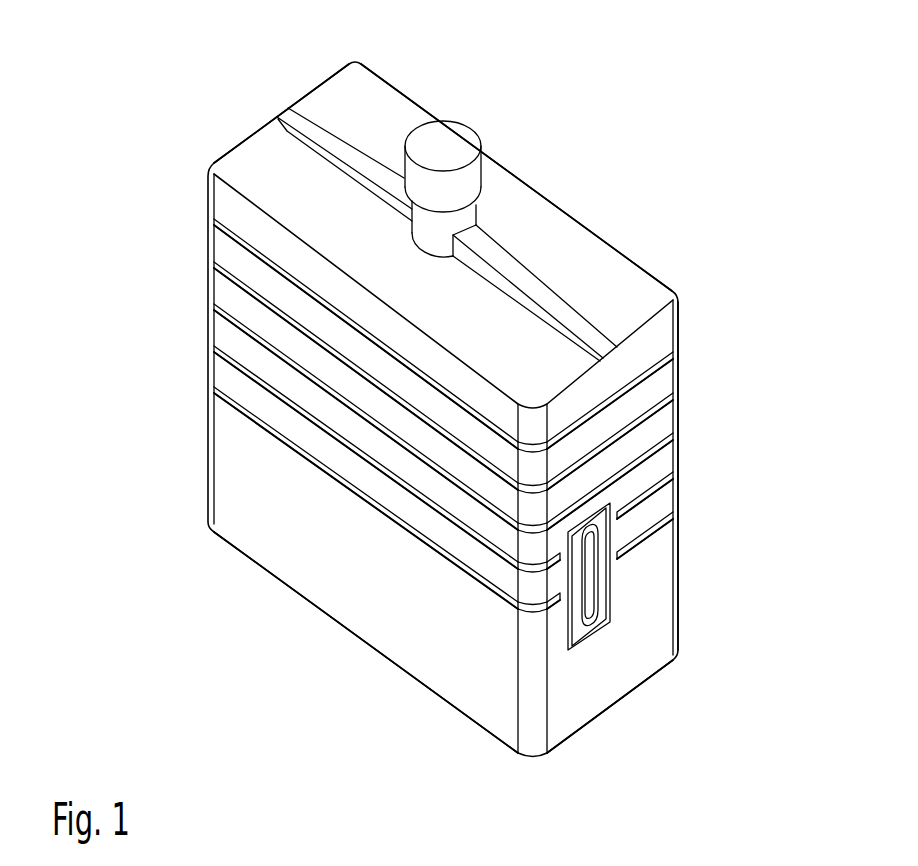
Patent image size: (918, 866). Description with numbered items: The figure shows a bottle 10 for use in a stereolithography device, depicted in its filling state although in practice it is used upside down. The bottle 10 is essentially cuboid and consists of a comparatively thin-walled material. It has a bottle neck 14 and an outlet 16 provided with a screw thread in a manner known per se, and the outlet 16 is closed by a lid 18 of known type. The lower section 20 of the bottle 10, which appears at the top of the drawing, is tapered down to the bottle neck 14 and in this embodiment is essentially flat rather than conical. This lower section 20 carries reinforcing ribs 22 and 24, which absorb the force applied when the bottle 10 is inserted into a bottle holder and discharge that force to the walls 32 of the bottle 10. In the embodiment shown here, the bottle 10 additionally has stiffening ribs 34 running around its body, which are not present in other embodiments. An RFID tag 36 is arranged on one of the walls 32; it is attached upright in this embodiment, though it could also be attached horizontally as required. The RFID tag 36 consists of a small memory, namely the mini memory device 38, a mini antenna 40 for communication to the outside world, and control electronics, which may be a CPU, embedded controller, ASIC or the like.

The bottle 10 is at (689, 121).
The bottle neck 14 is at (430, 227).
The outlet 16 is at (525, 89).
The lid 18 is at (447, 137).
The lower section 20 is at (721, 212).
The reinforcing rib 22 is at (505, 260).
The reinforcing rib 24 is at (325, 138).
The walls 32 is at (647, 578).
The stiffening ribs 34 is at (388, 518).
The RFID tag 36 is at (632, 613).
The mini memory device 38 is at (584, 604).
The mini antenna 40 is at (603, 537).